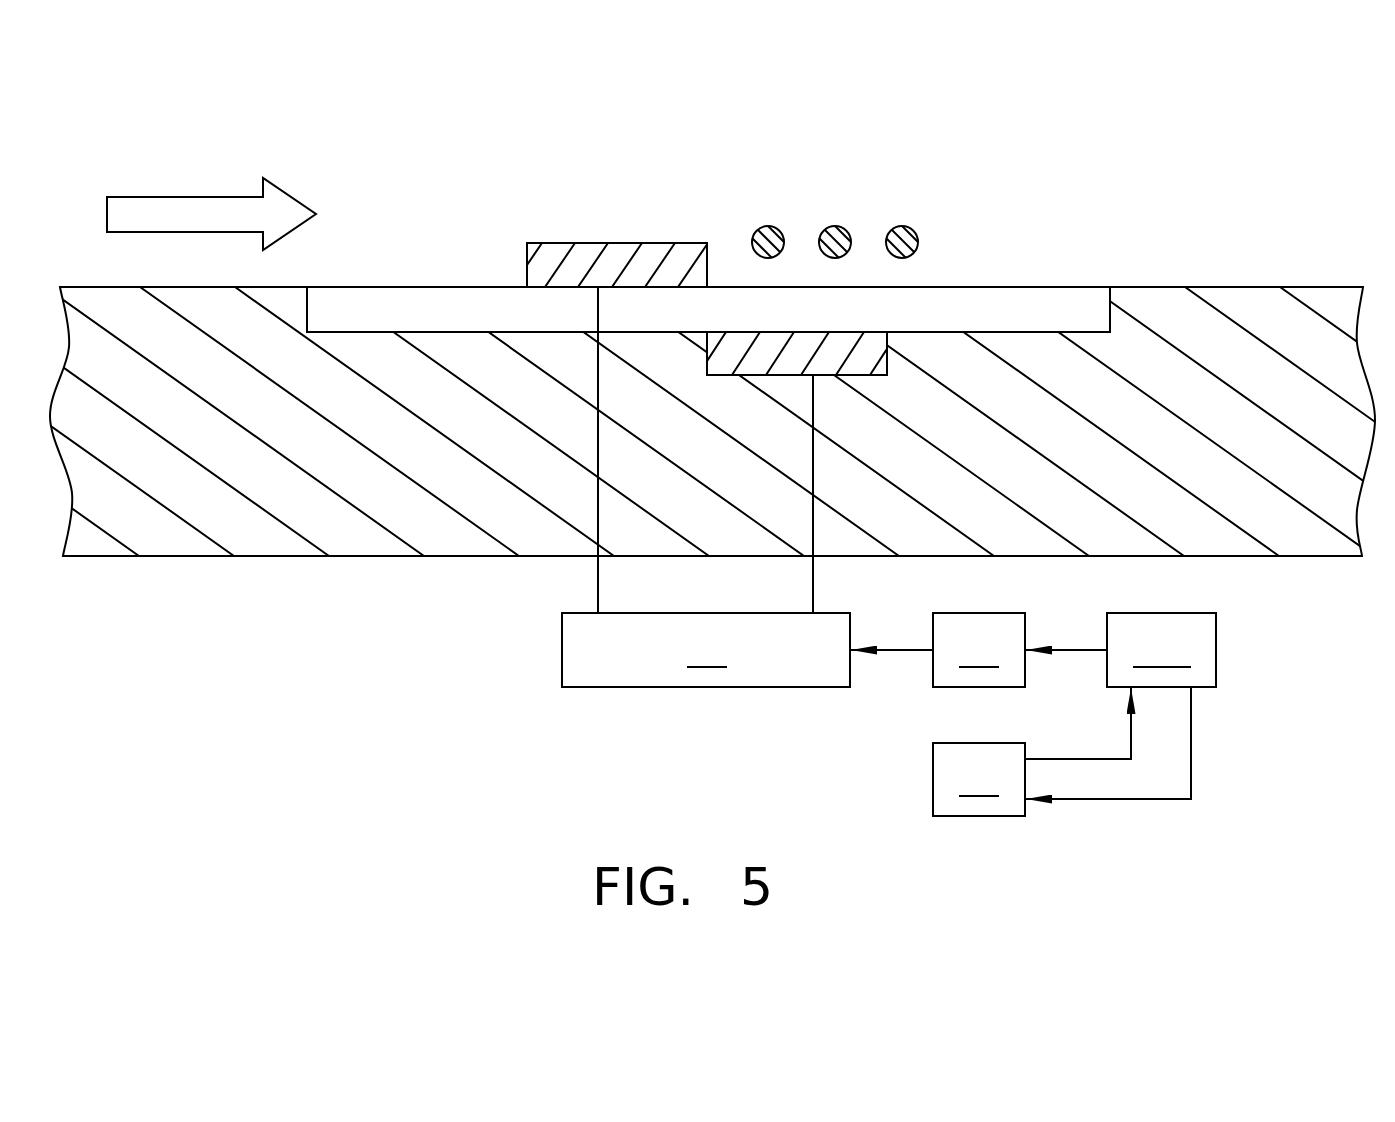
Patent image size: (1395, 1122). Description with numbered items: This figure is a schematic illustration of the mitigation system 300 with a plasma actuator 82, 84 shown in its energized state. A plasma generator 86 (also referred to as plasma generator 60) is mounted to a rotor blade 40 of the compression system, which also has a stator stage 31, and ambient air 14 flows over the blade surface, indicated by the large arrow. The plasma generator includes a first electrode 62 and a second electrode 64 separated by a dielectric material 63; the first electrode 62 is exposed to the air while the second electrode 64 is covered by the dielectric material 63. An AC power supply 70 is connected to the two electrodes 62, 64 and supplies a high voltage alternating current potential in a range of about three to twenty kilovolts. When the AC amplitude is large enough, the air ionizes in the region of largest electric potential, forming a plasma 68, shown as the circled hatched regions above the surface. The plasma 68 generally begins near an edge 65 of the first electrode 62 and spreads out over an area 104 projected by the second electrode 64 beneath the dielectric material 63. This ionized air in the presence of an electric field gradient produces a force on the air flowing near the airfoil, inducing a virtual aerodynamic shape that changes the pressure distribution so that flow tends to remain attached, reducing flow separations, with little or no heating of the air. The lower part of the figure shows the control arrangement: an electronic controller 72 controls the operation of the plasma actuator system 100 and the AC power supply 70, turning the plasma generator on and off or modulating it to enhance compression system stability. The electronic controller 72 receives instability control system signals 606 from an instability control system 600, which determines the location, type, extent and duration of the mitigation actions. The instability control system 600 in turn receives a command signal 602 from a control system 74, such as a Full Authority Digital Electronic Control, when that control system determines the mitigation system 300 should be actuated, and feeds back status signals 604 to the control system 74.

The ambient air 14 is at (196, 197).
The stator stage 31 is at (465, 537).
The rotor blade 40 is at (260, 556).
The plasma generator 60 is at (708, 259).
The first electrode 62 is at (577, 252).
The dielectric material 63 is at (497, 302).
The second electrode 64 is at (862, 365).
The edge 65 is at (707, 257).
The plasma 68 is at (908, 238).
The AC power supply 70 is at (706, 650).
The electronic controller 72 is at (938, 650).
The control system 74 is at (979, 779).
The plasma actuator 82 is at (1188, 161).
The plasma actuator 84 is at (1081, 124).
The plasma generator 86 is at (1260, 197).
The plasma actuator system 100 is at (618, 520).
The area 104 is at (805, 285).
The mitigation system 300 is at (1119, 712).
The instability control system 600 is at (1161, 650).
The command signal 602 is at (1100, 757).
The status signals 604 is at (1147, 802).
The instability control system signals 606 is at (1075, 646).